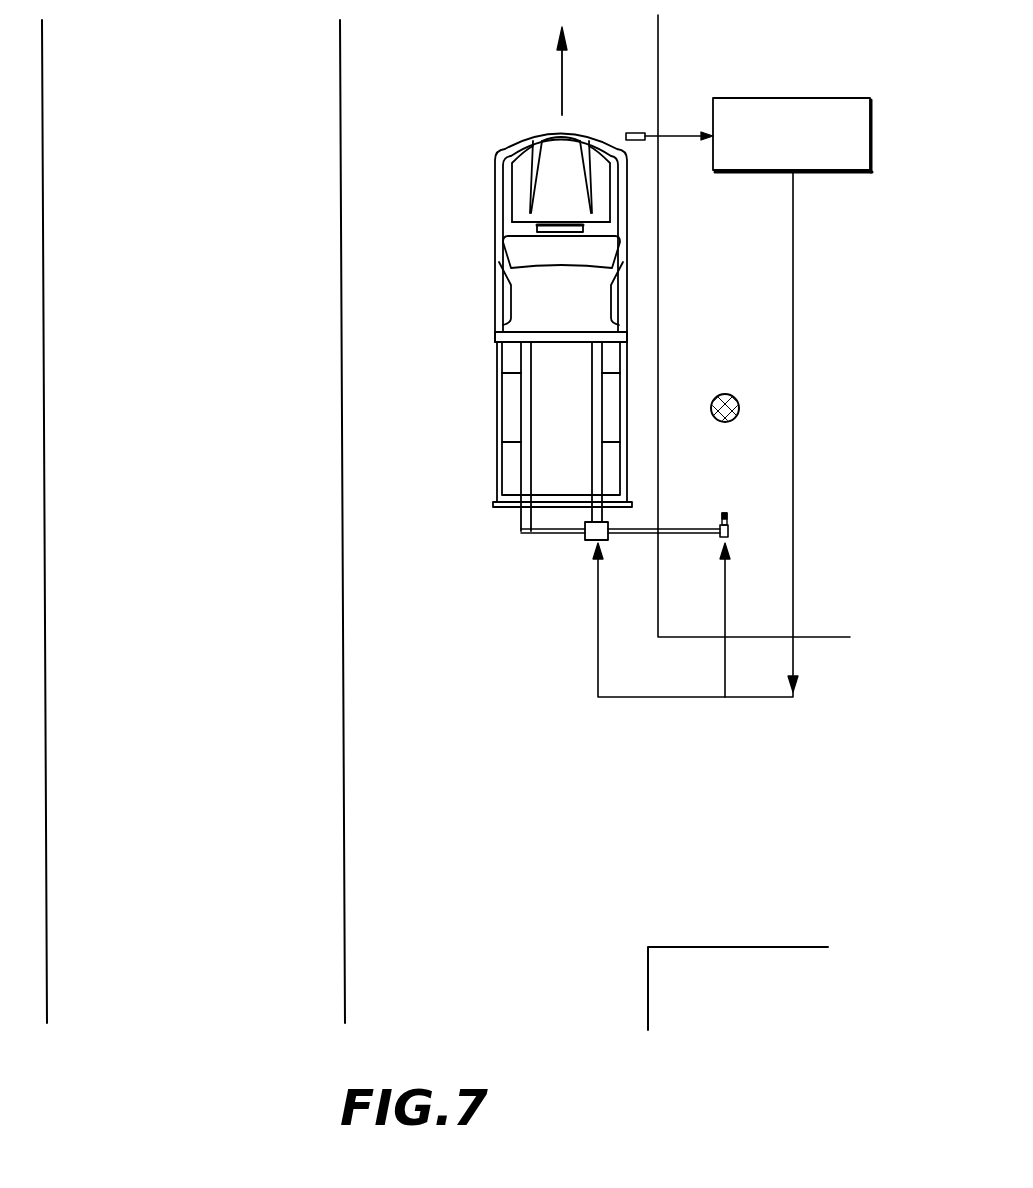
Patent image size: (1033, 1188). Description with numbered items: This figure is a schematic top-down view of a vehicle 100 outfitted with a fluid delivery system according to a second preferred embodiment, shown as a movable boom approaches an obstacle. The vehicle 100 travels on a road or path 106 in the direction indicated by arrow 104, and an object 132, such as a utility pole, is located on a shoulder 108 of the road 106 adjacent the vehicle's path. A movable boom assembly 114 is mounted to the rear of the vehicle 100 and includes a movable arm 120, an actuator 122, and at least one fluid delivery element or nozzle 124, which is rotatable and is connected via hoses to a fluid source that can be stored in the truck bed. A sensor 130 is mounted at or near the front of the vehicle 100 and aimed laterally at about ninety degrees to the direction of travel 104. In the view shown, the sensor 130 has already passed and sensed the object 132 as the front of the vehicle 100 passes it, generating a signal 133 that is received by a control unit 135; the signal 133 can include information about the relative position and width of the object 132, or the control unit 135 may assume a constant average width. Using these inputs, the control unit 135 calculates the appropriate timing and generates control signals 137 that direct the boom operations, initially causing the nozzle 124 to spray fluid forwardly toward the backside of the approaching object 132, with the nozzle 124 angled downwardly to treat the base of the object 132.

The vehicle 100 is at (495, 196).
The arrow indicating direction of travel 104 is at (562, 80).
The road or path 106 is at (490, 621).
The shoulder 108 is at (743, 283).
The movable boom assembly 114 is at (682, 537).
The movable arm 120 is at (650, 535).
The actuator 122 is at (590, 542).
The fluid delivery element or nozzle 124 is at (730, 530).
The sensor 130 is at (640, 133).
The object 132 is at (718, 395).
The signal 133 is at (680, 140).
The control unit 135 is at (760, 98).
The control signals 137 is at (795, 320).